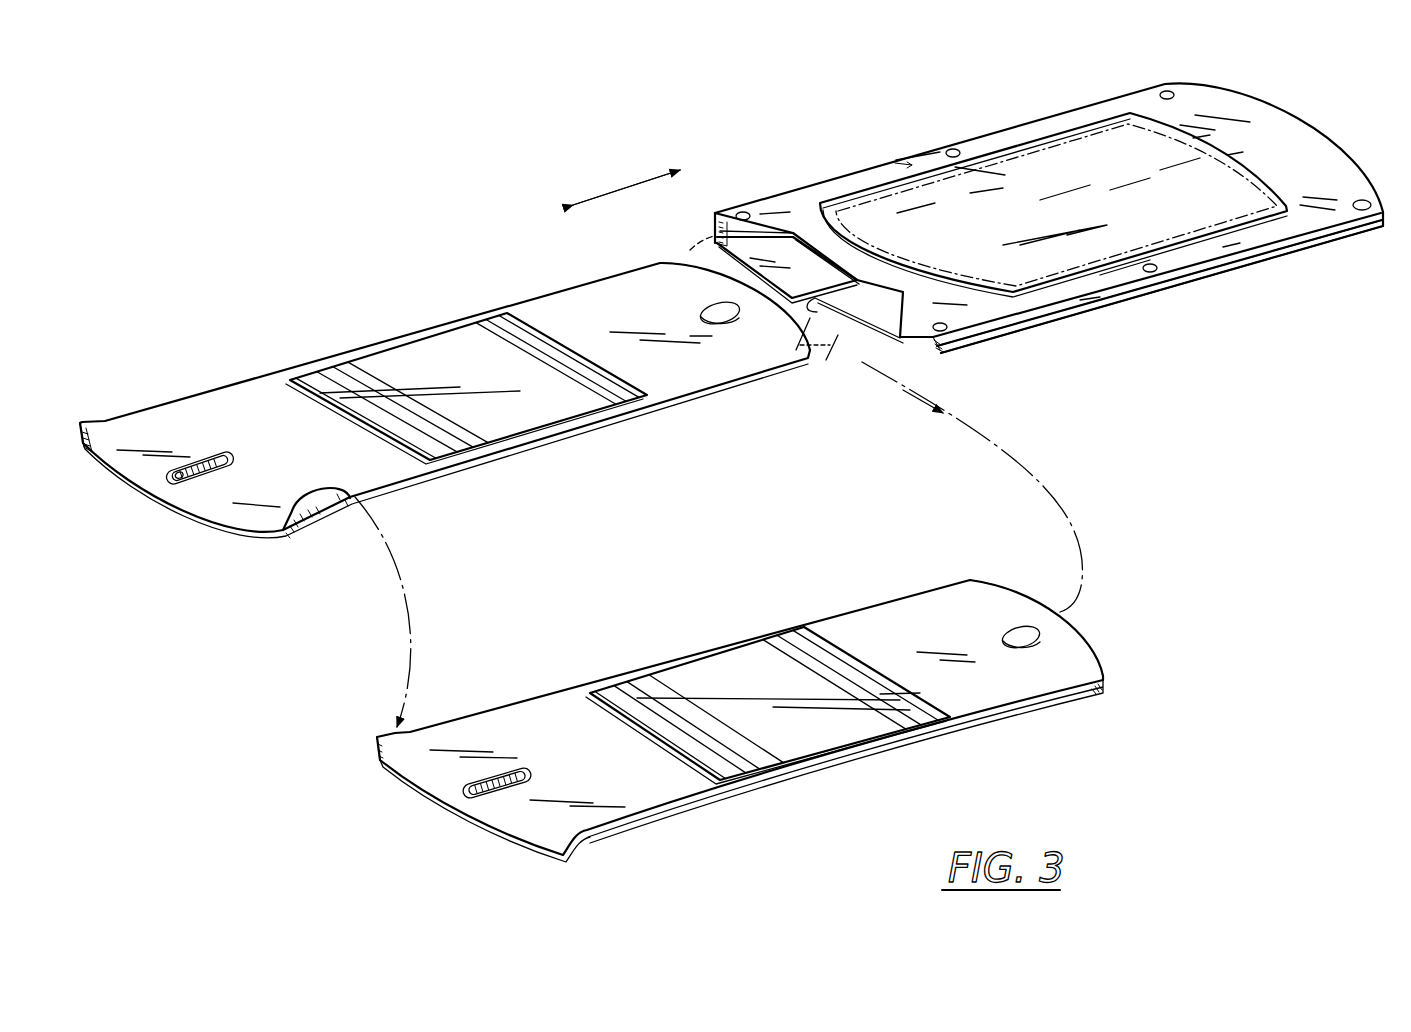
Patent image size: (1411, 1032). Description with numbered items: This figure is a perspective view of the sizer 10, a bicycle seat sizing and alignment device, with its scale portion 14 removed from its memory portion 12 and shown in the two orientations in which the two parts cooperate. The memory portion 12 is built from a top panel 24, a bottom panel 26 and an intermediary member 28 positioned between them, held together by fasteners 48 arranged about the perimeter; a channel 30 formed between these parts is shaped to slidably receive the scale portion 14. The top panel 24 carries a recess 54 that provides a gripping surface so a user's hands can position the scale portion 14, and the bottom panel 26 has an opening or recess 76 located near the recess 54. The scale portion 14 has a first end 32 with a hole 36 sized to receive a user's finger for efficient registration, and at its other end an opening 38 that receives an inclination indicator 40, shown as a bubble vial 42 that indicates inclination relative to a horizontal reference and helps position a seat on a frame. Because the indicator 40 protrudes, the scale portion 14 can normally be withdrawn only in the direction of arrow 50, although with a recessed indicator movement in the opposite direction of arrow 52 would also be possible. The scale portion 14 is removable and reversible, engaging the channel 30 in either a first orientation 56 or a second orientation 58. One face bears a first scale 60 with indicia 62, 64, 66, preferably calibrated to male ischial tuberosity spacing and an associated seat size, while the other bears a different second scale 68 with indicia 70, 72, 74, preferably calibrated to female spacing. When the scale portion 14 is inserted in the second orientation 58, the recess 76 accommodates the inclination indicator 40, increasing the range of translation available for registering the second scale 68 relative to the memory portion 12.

The sizer 10 is at (771, 102).
The memory portion 12 is at (1212, 95).
The scale portion 14 is at (97, 422).
The top panel 24 is at (1230, 245).
The bottom panel 26 is at (1150, 303).
The intermediary member 28 is at (1160, 292).
The channel 30 is at (887, 305).
The first end 32 is at (697, 262).
The hole 36 is at (710, 303).
The opening 38 is at (170, 475).
The inclination indicator 40 is at (182, 480).
The bubble vial 42 is at (210, 482).
The fasteners 48 is at (1363, 199).
The arrow 50 is at (610, 190).
The arrow 52 is at (626, 187).
The recess 54 is at (773, 233).
The first orientation 56 is at (240, 545).
The second orientation 58 is at (397, 817).
The first scale 60 is at (388, 310).
The indicia 62 is at (333, 366).
The indicia 64 is at (317, 371).
The indicia 66 is at (293, 380).
The second scale 68 is at (691, 658).
The indicia 70 is at (649, 676).
The indicia 72 is at (616, 687).
The indicia 74 is at (603, 695).
The recess 76 is at (857, 280).